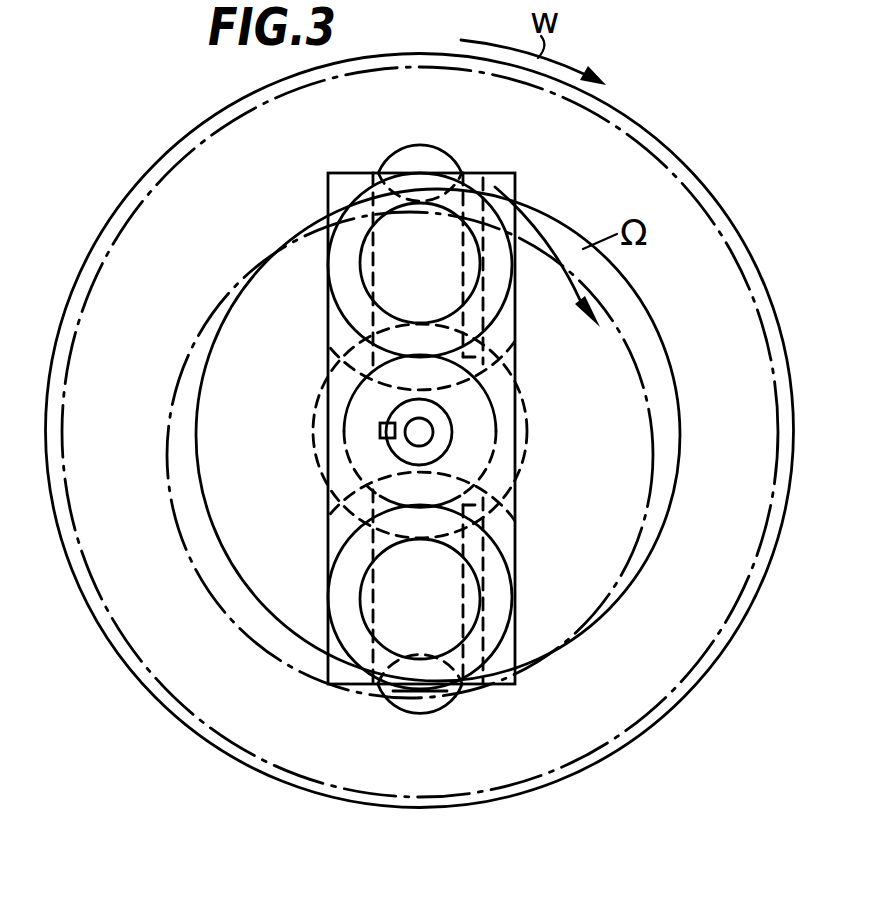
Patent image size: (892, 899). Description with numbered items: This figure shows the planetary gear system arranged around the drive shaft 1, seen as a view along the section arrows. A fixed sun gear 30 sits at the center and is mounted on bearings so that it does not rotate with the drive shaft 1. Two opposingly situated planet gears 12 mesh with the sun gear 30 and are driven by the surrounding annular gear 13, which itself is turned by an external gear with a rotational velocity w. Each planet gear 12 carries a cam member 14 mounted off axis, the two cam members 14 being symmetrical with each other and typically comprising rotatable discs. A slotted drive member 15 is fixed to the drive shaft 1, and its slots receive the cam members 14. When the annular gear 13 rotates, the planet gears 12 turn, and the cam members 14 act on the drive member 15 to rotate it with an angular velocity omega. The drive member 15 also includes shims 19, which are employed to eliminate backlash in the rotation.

The drive shaft 1 is at (442, 428).
The planet gears 12 is at (347, 290).
The annular gear 13 is at (170, 478).
The cam members 14 is at (410, 153).
The slotted drive member 15 is at (341, 343).
The shims 19 is at (483, 320).
The sun gear 30 is at (527, 452).